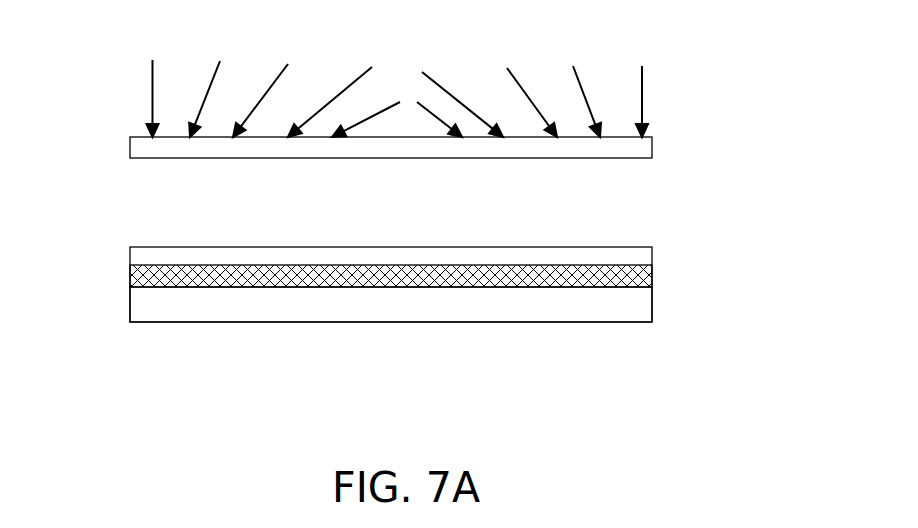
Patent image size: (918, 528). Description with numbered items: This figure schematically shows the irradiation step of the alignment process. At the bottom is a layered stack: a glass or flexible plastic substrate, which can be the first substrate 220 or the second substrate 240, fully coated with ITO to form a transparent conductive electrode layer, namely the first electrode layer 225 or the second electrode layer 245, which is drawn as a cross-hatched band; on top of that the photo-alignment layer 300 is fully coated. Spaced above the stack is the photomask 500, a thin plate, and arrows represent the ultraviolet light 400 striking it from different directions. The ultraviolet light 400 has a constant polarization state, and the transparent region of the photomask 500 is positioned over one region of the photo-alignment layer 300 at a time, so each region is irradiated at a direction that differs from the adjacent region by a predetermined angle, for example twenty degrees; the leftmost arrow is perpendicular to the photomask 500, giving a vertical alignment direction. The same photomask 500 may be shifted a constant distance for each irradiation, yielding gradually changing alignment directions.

The ultraviolet light 400 is at (152, 86).
The photomask 500 is at (653, 152).
The photo-alignment layer 300 is at (417, 296).
The first electrode layer 225 is at (457, 236).
The second electrode layer 245 is at (652, 277).
The first substrate 220 is at (452, 347).
The second substrate 240 is at (656, 312).